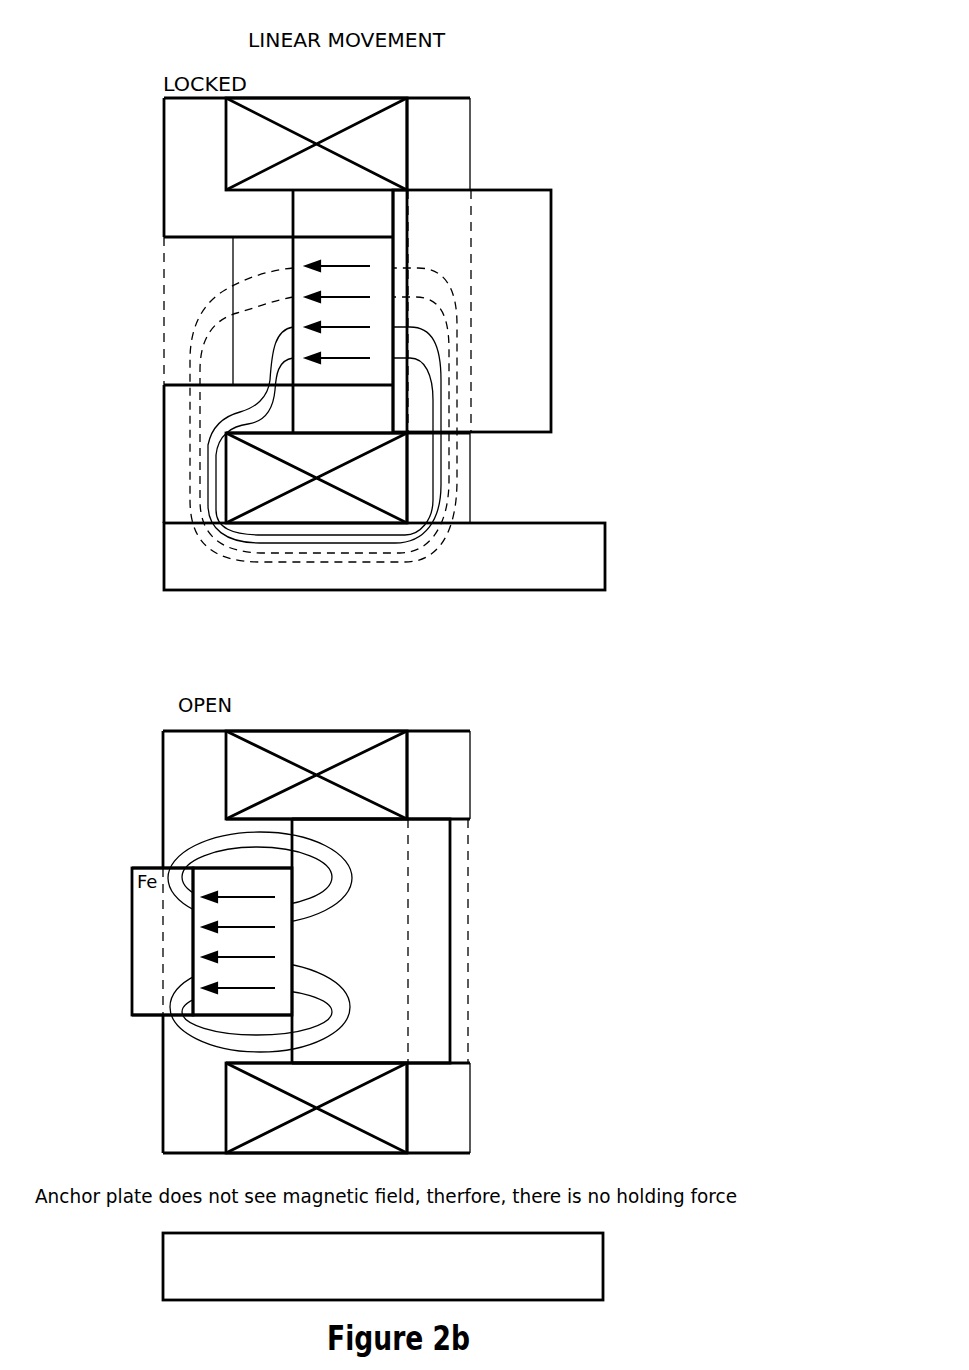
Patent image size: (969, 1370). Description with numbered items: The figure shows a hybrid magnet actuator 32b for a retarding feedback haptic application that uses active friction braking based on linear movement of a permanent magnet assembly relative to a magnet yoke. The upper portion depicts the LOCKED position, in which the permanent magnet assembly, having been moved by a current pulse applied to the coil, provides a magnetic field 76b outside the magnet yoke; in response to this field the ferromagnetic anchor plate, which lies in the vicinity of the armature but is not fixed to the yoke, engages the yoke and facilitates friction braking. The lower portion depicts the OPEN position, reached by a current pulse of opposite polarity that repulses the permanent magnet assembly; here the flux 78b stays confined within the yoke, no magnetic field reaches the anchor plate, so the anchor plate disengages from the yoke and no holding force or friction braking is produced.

The hybrid magnet actuator 32b is at (572, 118).
The magnetic field 76b is at (392, 562).
The magnetic flux lines (open state) 78b is at (335, 1040).